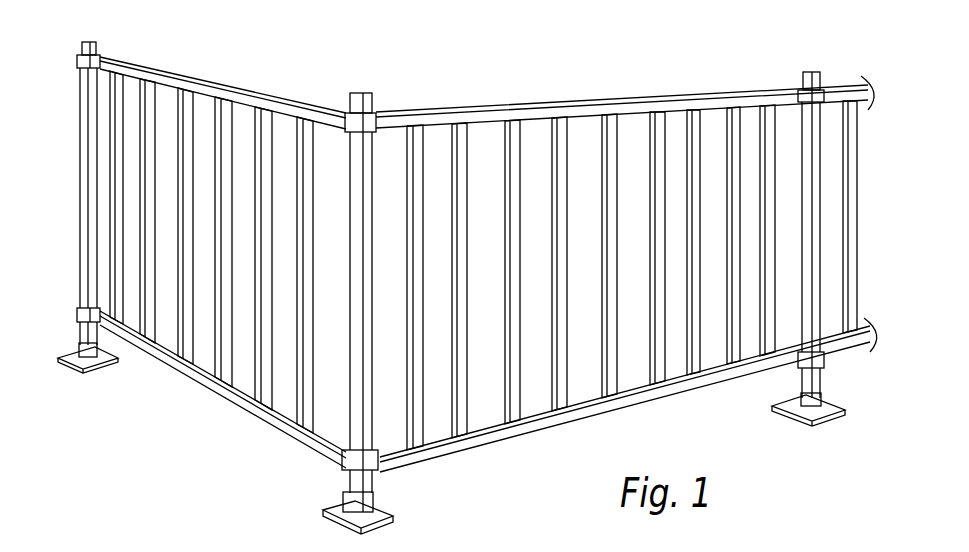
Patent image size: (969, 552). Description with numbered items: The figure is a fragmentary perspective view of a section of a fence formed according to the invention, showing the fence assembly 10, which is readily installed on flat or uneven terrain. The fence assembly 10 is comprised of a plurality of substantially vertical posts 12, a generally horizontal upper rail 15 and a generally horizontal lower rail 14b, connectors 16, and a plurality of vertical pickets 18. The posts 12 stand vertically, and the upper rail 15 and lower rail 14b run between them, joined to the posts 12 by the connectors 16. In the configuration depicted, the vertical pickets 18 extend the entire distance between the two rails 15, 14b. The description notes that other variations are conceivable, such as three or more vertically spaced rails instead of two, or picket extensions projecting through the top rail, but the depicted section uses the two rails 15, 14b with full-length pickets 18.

The fence assembly 10 is at (463, 103).
The vertical posts 12 is at (88, 268).
The lower rail 14b is at (286, 414).
The upper rail 15 is at (256, 93).
The connectors 16 is at (100, 57).
The vertical pickets 18 is at (565, 140).